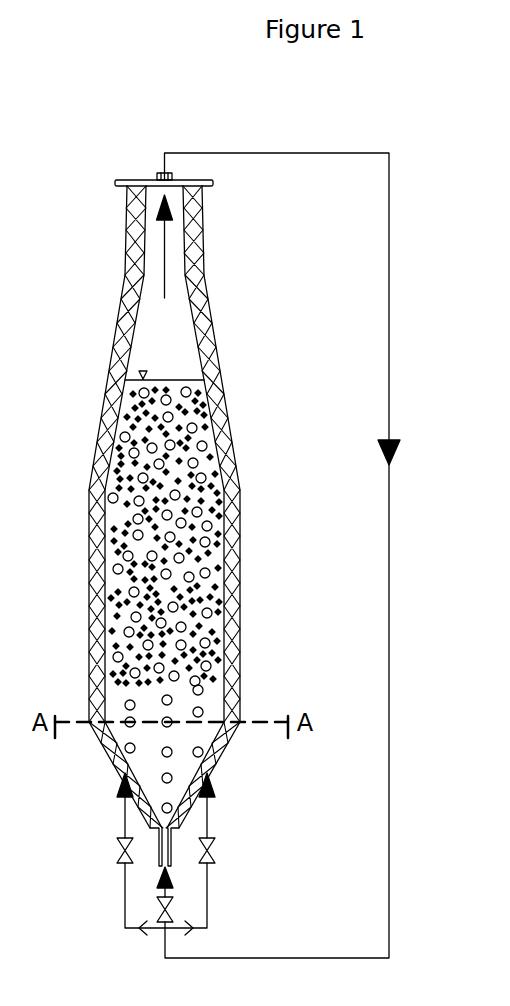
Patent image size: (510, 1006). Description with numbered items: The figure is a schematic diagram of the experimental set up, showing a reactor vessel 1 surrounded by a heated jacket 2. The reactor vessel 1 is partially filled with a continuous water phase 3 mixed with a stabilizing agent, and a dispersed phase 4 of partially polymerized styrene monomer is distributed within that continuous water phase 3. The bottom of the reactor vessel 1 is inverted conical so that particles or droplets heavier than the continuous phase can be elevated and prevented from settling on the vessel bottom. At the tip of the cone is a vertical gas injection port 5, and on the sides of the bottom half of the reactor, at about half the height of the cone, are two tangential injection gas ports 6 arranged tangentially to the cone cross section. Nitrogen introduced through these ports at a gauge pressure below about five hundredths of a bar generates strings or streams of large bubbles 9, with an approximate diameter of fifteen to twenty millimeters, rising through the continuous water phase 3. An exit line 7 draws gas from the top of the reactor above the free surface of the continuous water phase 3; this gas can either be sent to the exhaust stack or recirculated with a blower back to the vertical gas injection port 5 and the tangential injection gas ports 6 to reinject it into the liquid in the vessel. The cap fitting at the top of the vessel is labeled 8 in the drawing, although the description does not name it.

The reactor vessel 1 is at (210, 317).
The heated jacket 2 is at (223, 422).
The continuous water phase 3 is at (198, 578).
The dispersed phase 4 is at (208, 513).
The vertical gas injection port 5 is at (181, 894).
The tangential injection gas ports 6 is at (160, 854).
The exit line 7 is at (390, 360).
The gas outlet cap 8 is at (152, 173).
The large bubbles 9 is at (197, 732).